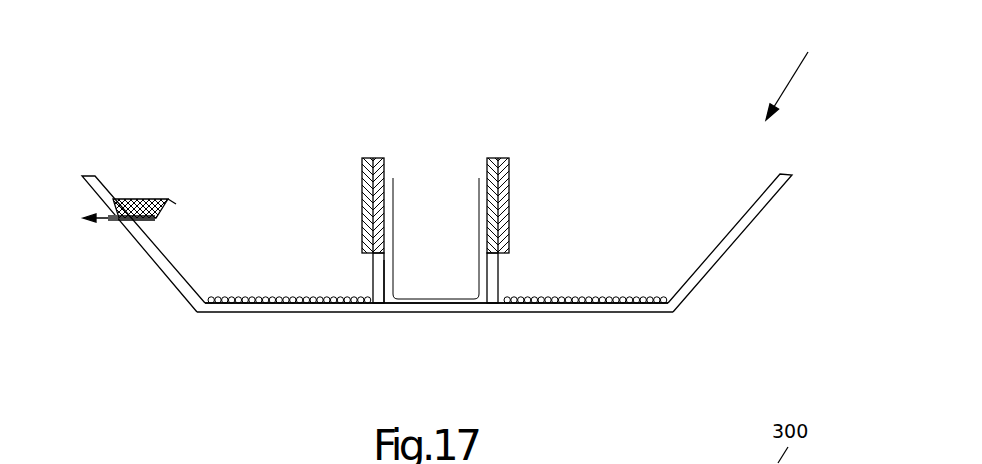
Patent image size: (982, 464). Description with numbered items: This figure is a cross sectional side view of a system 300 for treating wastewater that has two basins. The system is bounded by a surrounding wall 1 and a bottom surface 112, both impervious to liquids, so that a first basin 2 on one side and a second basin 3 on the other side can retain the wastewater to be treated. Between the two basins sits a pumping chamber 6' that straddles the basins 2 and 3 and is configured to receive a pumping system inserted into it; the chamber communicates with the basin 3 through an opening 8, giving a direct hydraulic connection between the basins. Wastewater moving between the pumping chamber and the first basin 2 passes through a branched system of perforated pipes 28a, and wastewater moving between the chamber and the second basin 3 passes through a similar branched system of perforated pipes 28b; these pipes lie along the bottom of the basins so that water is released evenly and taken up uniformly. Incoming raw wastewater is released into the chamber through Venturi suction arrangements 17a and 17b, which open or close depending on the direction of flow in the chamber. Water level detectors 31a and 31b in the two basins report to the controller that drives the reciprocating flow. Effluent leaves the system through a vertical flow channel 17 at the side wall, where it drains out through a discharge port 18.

The surrounding wall 1 is at (187, 292).
The first basin 2 is at (647, 228).
The second basin 3 is at (247, 230).
The pumping chamber 6' is at (476, 238).
The opening 8 is at (390, 266).
The vertical flow channel 17 is at (137, 202).
The Venturi suction arrangement 17a is at (483, 268).
The Venturi suction arrangement 17b is at (378, 275).
The discharge port 18 is at (109, 221).
The branched system of perforated pipes 28a is at (608, 302).
The branched system of perforated pipes 28b is at (208, 301).
The water level detector 31a is at (508, 179).
The water level detector 31b is at (366, 190).
The bottom surface 112 is at (267, 308).
The system for wastewater treatment 300 is at (796, 75).